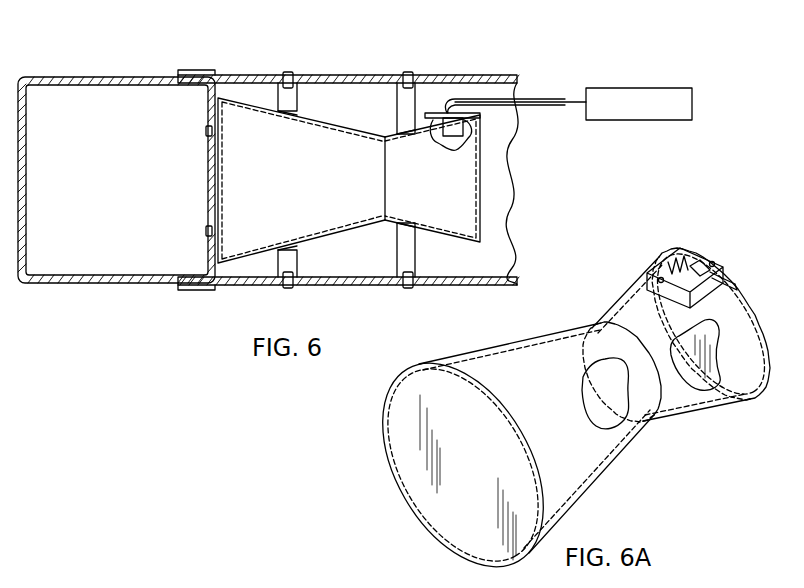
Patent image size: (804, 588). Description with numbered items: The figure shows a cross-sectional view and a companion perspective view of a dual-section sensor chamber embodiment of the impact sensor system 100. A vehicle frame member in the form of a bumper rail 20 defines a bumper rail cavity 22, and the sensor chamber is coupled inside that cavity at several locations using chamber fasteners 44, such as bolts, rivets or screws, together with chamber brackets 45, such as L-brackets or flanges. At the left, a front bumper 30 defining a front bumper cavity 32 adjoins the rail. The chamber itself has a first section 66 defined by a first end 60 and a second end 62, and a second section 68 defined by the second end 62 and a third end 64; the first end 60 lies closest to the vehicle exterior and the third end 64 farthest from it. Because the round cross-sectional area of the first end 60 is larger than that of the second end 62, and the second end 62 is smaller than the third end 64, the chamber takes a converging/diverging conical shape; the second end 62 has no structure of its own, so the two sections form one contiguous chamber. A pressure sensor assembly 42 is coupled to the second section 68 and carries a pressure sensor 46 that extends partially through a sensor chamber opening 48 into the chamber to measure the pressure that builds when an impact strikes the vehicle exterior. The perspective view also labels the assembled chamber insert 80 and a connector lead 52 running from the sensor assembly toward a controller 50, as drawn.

In FIG. 6, the impact sensor system 100 is at (350, 55).
In FIG. 6, the bumper rail 20 is at (471, 72).
In FIG. 6, the bumper rail cavity 22 is at (508, 232).
In FIG. 6, the front bumper 30 is at (128, 72).
In FIG. 6, the front bumper cavity 32 is at (67, 100).
In FIG. 6A, the pressure sensor assembly 42 is at (690, 250).
In FIG. 6, the chamber fasteners 44 is at (289, 72).
In FIG. 6, the chamber brackets 45 is at (279, 100).
In FIG. 6, the pressure sensor 46 is at (443, 152).
In FIG. 6, the sensor chamber opening 48 is at (462, 135).
In FIG. 6, the controller 50 is at (689, 88).
In FIG. 6, the wire / cable 52 is at (531, 97).
In FIG. 6A, the wire / cable 52 is at (727, 282).
In FIG. 6, the first end 60 is at (221, 160).
In FIG. 6A, the first end 60 is at (418, 458).
In FIG. 6, the second end 62 is at (384, 162).
In FIG. 6A, the second end 62 is at (612, 410).
In FIG. 6, the third end 64 is at (474, 182).
In FIG. 6A, the third end 64 is at (712, 390).
In FIG. 6, the first section 66 is at (352, 250).
In FIG. 6A, the first section 66 is at (630, 475).
In FIG. 6, the second section 68 is at (449, 250).
In FIG. 6A, the second section 68 is at (717, 431).
In FIG. 6, the venturi insert 80 is at (486, 252).
In FIG. 6A, the venturi insert 80 is at (355, 442).